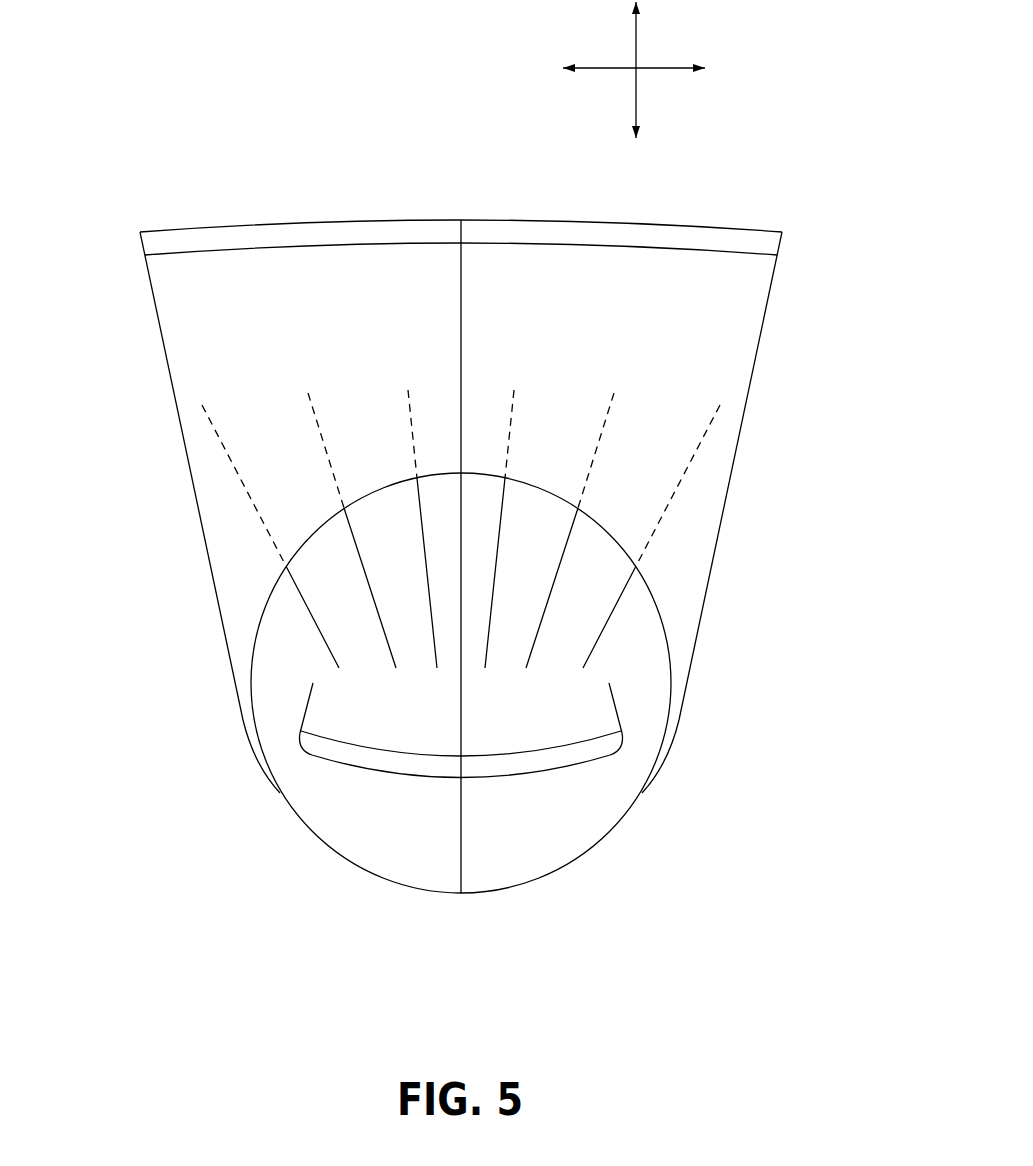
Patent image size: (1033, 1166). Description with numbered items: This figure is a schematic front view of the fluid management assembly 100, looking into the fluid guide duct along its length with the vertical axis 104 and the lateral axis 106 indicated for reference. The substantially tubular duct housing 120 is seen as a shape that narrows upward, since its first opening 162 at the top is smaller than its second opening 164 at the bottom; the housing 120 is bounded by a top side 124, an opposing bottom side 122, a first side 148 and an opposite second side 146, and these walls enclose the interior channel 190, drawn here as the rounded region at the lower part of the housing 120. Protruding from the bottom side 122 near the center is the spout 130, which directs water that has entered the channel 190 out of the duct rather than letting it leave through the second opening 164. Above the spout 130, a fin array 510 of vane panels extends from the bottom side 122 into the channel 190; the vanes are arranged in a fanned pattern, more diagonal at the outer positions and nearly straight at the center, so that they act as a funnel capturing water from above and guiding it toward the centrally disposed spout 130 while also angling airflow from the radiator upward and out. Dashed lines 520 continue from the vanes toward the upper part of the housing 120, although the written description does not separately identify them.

The fluid management assembly 100 is at (449, 505).
The vertical axis 104 is at (638, 36).
The lateral axis 106 is at (668, 70).
The duct housing 120 is at (156, 414).
The bottom side 122 is at (690, 734).
The top side 124 is at (380, 303).
The spout 130 is at (566, 783).
The second side 146 is at (742, 558).
The first side 148 is at (183, 527).
The first opening 162 is at (464, 198).
The second opening 164 is at (462, 909).
The interior channel 190 is at (385, 840).
The fin array 510 is at (303, 633).
The extended light rays 520 is at (677, 492).